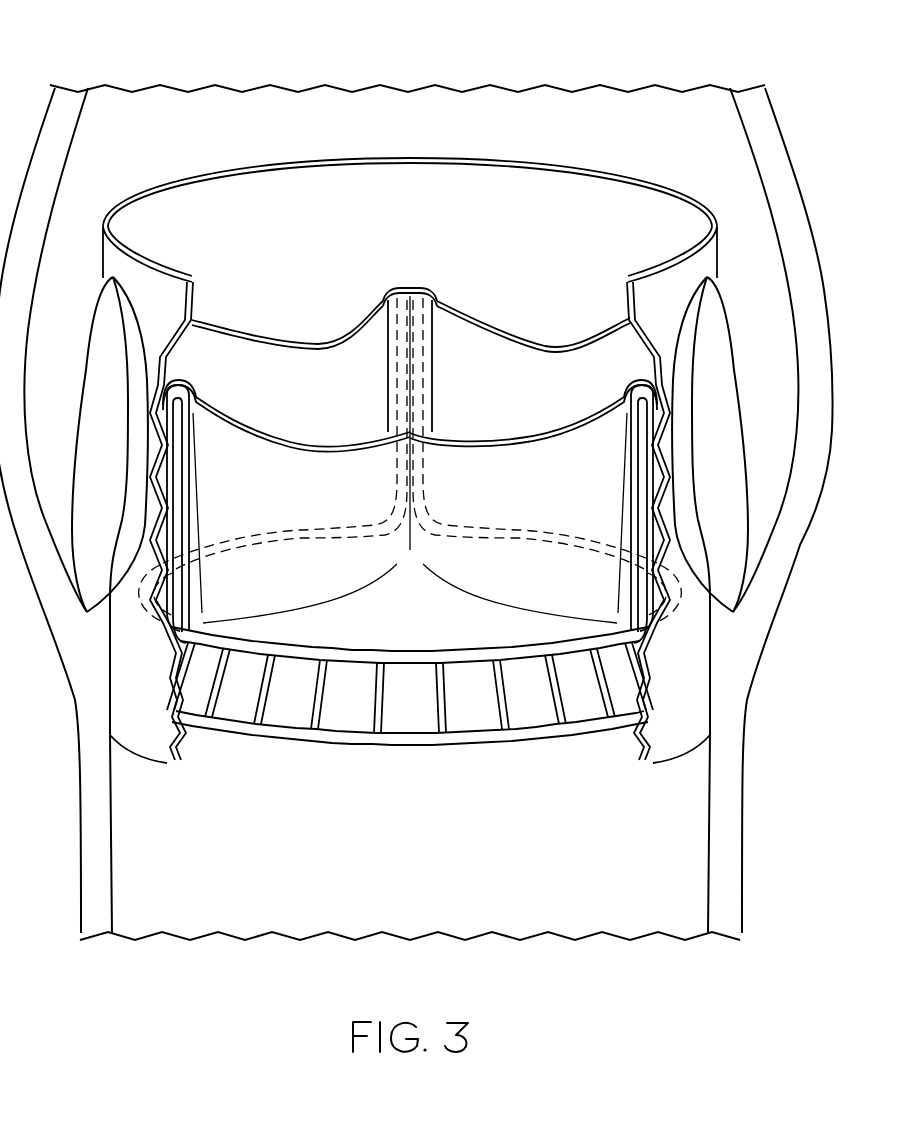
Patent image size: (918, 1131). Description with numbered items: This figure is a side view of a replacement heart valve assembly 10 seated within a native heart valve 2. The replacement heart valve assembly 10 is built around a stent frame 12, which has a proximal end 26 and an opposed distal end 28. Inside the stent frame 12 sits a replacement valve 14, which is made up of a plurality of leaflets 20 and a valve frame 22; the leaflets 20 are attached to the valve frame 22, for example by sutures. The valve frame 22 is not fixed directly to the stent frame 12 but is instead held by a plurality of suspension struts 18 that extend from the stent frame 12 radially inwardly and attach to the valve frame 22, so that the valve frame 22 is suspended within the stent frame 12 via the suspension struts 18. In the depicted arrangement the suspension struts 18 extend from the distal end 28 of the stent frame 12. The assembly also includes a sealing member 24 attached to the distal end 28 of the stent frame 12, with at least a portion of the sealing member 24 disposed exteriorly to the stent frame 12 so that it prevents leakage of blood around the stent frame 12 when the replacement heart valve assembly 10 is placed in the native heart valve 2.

The native heart valve 2 is at (105, 362).
The replacement heart valve assembly 10 is at (655, 133).
The stent frame 12 is at (222, 173).
The replacement valve 14 is at (410, 343).
The suspension struts 18 is at (373, 714).
The leaflets 20 is at (250, 597).
The valve frame 22 is at (415, 664).
The sealing member 24 is at (157, 702).
The proximal end 26 is at (498, 124).
The distal end 28 is at (507, 776).